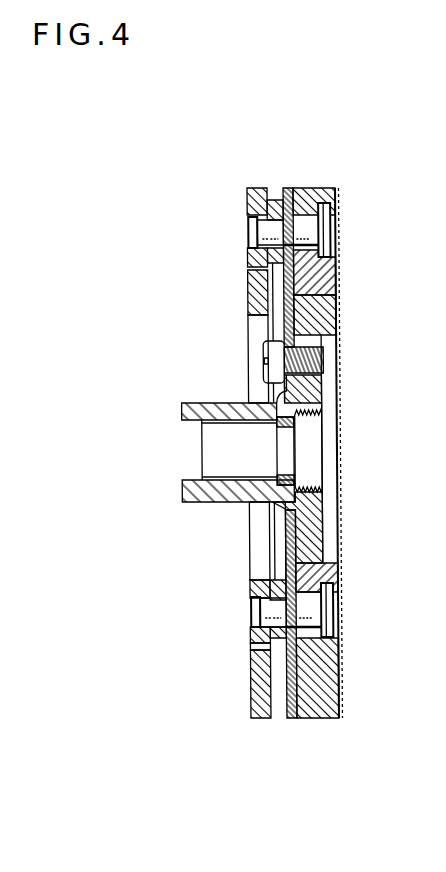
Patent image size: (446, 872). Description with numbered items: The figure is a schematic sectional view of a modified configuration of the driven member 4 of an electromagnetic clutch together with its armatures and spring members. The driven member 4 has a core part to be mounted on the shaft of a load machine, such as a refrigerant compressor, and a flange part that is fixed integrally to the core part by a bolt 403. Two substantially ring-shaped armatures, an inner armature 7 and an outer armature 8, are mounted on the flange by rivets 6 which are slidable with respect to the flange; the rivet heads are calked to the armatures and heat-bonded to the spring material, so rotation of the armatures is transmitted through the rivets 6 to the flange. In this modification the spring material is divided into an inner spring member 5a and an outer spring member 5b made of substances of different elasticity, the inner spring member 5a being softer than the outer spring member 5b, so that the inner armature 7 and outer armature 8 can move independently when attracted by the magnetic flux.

The driven member 4 is at (317, 398).
The inner spring member 5a is at (333, 290).
The outer spring member 5b is at (307, 193).
The rivets 6 is at (272, 229).
The inner armature 7 is at (252, 295).
The outer armature 8 is at (252, 197).
The bolt 403 is at (325, 357).